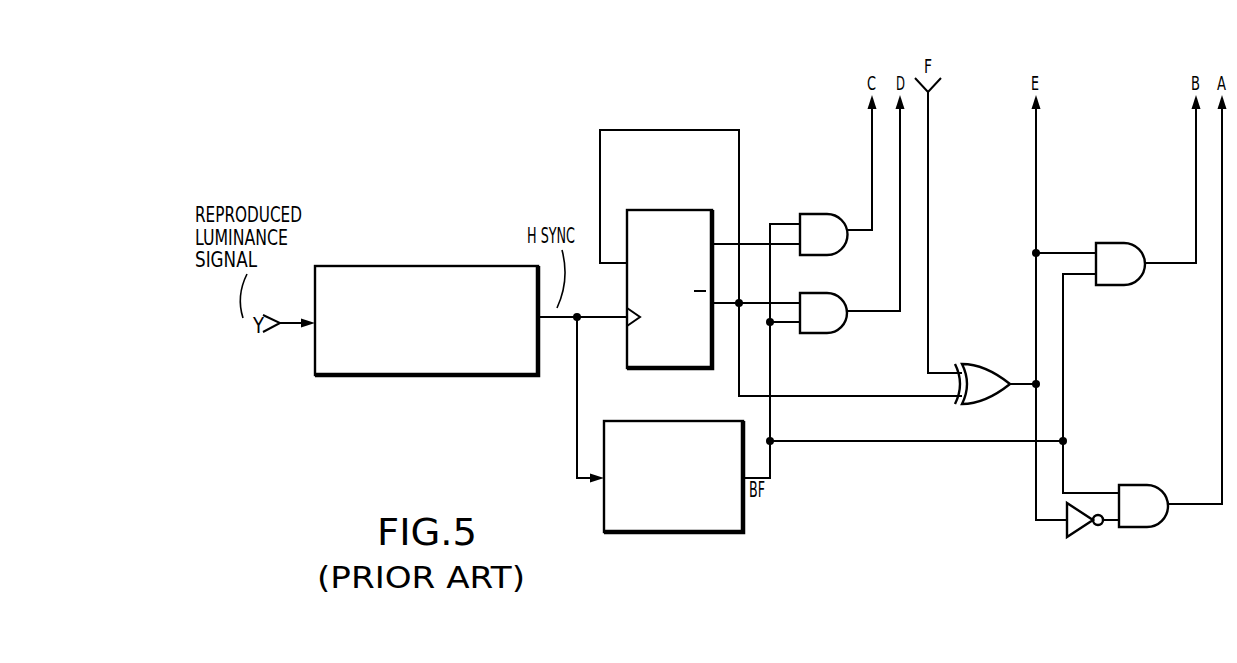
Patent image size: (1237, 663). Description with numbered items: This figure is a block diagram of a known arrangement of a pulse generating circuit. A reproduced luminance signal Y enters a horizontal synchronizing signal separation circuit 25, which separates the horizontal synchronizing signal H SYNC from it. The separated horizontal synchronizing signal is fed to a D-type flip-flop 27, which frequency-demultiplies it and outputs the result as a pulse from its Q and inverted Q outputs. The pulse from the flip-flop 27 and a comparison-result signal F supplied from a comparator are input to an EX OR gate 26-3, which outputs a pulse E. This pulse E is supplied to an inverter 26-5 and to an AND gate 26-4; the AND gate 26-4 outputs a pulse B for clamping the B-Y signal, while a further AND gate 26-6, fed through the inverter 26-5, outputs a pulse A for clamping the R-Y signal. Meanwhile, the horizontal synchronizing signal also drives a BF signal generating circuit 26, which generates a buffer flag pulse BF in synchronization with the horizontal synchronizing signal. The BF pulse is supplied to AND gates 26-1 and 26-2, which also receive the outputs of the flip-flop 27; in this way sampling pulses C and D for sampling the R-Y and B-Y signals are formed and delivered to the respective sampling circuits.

The horizontal synchronizing signal separation circuit 25 is at (420, 376).
The BF signal generating circuit 26 is at (668, 533).
The D-type flip-flop 27 is at (657, 210).
The AND gate 26-1 is at (815, 212).
The AND gate 26-2 is at (822, 333).
The EX OR gate 26-3 is at (977, 365).
The AND gate 26-4 is at (1113, 245).
The inverter 26-5 is at (1080, 530).
The AND gate 26-6 is at (1138, 486).